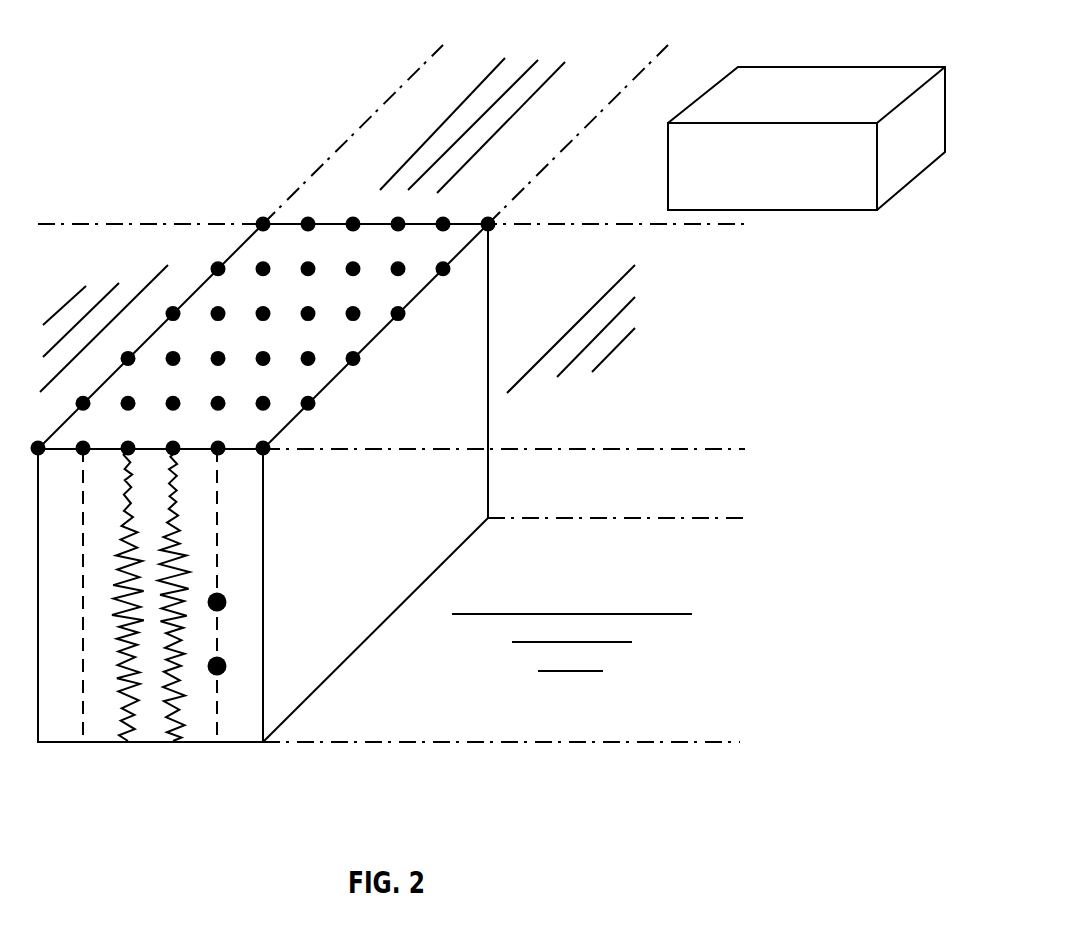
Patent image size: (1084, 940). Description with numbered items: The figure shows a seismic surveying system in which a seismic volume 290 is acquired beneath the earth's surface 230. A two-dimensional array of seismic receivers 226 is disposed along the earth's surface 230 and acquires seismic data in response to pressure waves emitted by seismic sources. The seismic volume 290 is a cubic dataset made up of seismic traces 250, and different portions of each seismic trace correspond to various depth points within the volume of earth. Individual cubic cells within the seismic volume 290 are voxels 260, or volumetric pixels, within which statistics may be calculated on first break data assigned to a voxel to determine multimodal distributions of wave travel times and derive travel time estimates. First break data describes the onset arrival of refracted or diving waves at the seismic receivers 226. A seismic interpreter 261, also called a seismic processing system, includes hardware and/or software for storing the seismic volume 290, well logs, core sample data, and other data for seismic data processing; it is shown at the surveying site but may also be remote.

The seismic receivers 226 is at (263, 282).
The earth's surface 230 is at (700, 421).
The seismic traces 250 is at (160, 662).
The voxels 260 is at (335, 657).
The seismic interpreter 261 is at (835, 186).
The seismic volume 290 is at (372, 569).